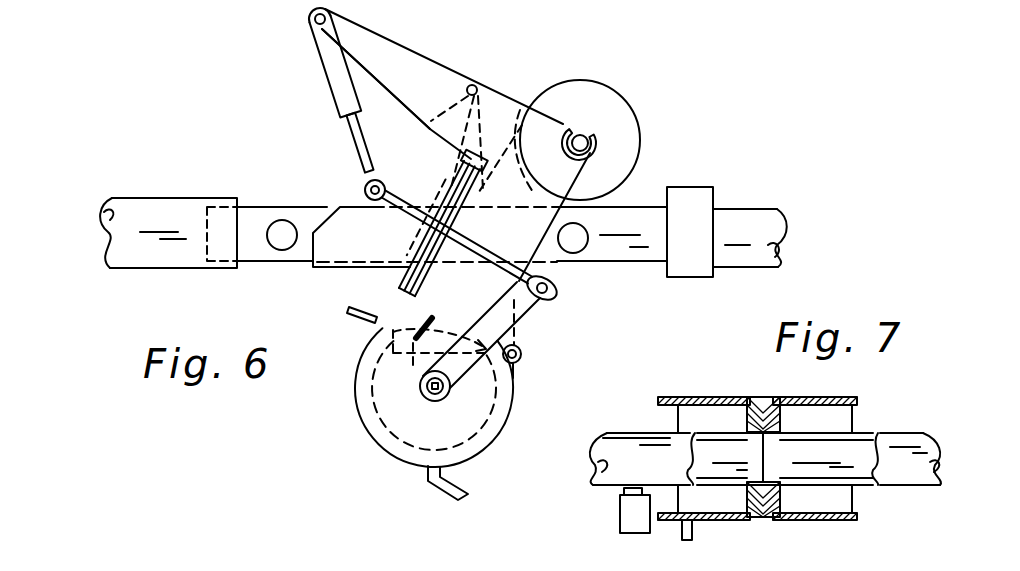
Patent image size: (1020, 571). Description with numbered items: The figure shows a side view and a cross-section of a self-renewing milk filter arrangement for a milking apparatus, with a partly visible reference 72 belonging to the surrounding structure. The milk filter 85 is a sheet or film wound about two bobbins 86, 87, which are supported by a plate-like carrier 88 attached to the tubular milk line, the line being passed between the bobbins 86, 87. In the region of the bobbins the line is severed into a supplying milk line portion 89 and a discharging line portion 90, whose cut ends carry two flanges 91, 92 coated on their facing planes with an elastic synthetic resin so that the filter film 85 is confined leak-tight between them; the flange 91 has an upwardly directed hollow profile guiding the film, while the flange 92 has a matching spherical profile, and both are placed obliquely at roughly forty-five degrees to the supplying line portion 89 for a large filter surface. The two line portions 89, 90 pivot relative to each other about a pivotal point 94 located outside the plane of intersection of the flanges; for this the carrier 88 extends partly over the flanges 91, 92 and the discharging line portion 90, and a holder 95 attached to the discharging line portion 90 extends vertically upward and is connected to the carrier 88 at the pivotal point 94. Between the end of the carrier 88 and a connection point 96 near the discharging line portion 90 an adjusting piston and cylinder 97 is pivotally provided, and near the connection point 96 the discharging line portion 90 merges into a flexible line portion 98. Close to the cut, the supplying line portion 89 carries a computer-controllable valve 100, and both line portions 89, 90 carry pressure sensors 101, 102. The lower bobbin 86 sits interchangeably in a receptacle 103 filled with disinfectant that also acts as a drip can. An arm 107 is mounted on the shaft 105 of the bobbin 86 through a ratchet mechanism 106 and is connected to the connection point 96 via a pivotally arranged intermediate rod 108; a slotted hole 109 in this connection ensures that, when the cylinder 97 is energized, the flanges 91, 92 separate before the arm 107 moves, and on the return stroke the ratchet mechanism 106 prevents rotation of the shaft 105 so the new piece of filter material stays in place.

In FIG. 6, the frame 72 is at (551, 7).
In FIG. 6, the milk filter 85 is at (470, 58).
In FIG. 6, the lower bobbin 86 is at (380, 437).
In FIG. 6, the bobbin 87 is at (620, 103).
In FIG. 6, the plate-like carrier 88 is at (510, 97).
In FIG. 7, the plate-like carrier 88 is at (820, 518).
In FIG. 6, the supplying milk line portion 89 is at (770, 220).
In FIG. 7, the supplying milk line portion 89 is at (917, 437).
In FIG. 6, the discharging line portion 90 is at (250, 205).
In FIG. 7, the discharging line portion 90 is at (630, 432).
In FIG. 6, the flange 91 is at (425, 294).
In FIG. 7, the flange 91 is at (772, 399).
In FIG. 6, the flange 92 is at (400, 281).
In FIG. 7, the flange 92 is at (747, 415).
In FIG. 6, the pivotal point 94 is at (467, 90).
In FIG. 6, the holder 95 is at (422, 151).
In FIG. 6, the connection point 96 is at (364, 191).
In FIG. 7, the connection point 96 is at (692, 533).
In FIG. 6, the adjusting piston and cylinder 97 is at (329, 84).
In FIG. 6, the flexible line portion 98 is at (162, 203).
In FIG. 6, the computer-controllable valve 100 is at (700, 187).
In FIG. 6, the pressure sensor 101 is at (588, 243).
In FIG. 6, the pressure sensor 102 is at (270, 243).
In FIG. 7, the pressure sensor 102 is at (620, 518).
In FIG. 6, the receptacle 103 is at (362, 361).
In FIG. 6, the shaft 105 is at (422, 388).
In FIG. 6, the ratchet mechanism 106 is at (437, 402).
In FIG. 6, the arm 107 is at (476, 378).
In FIG. 6, the intermediate rod 108 is at (470, 242).
In FIG. 6, the slotted hole 109 is at (557, 298).